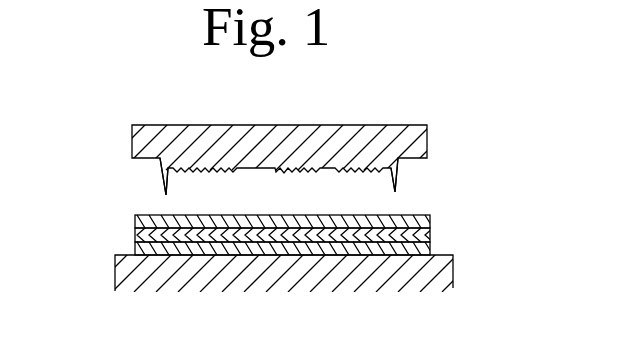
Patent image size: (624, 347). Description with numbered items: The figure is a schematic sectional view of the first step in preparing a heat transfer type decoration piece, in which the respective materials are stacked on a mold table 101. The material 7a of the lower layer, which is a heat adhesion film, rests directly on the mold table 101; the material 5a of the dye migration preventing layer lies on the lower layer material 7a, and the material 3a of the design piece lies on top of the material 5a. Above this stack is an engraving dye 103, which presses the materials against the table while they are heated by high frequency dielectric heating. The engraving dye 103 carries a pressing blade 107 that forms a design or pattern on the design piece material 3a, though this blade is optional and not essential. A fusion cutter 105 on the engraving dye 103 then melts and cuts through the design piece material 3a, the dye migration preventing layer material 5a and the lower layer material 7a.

The engraving dye 103 is at (363, 137).
The fusion cutter 105 is at (397, 178).
The pressing blade 107 is at (217, 171).
The material of the design piece 3a is at (415, 213).
The material of the dye migration preventing layer 5a is at (430, 233).
The material of the lower layer 7a is at (430, 244).
The mold table 101 is at (447, 272).